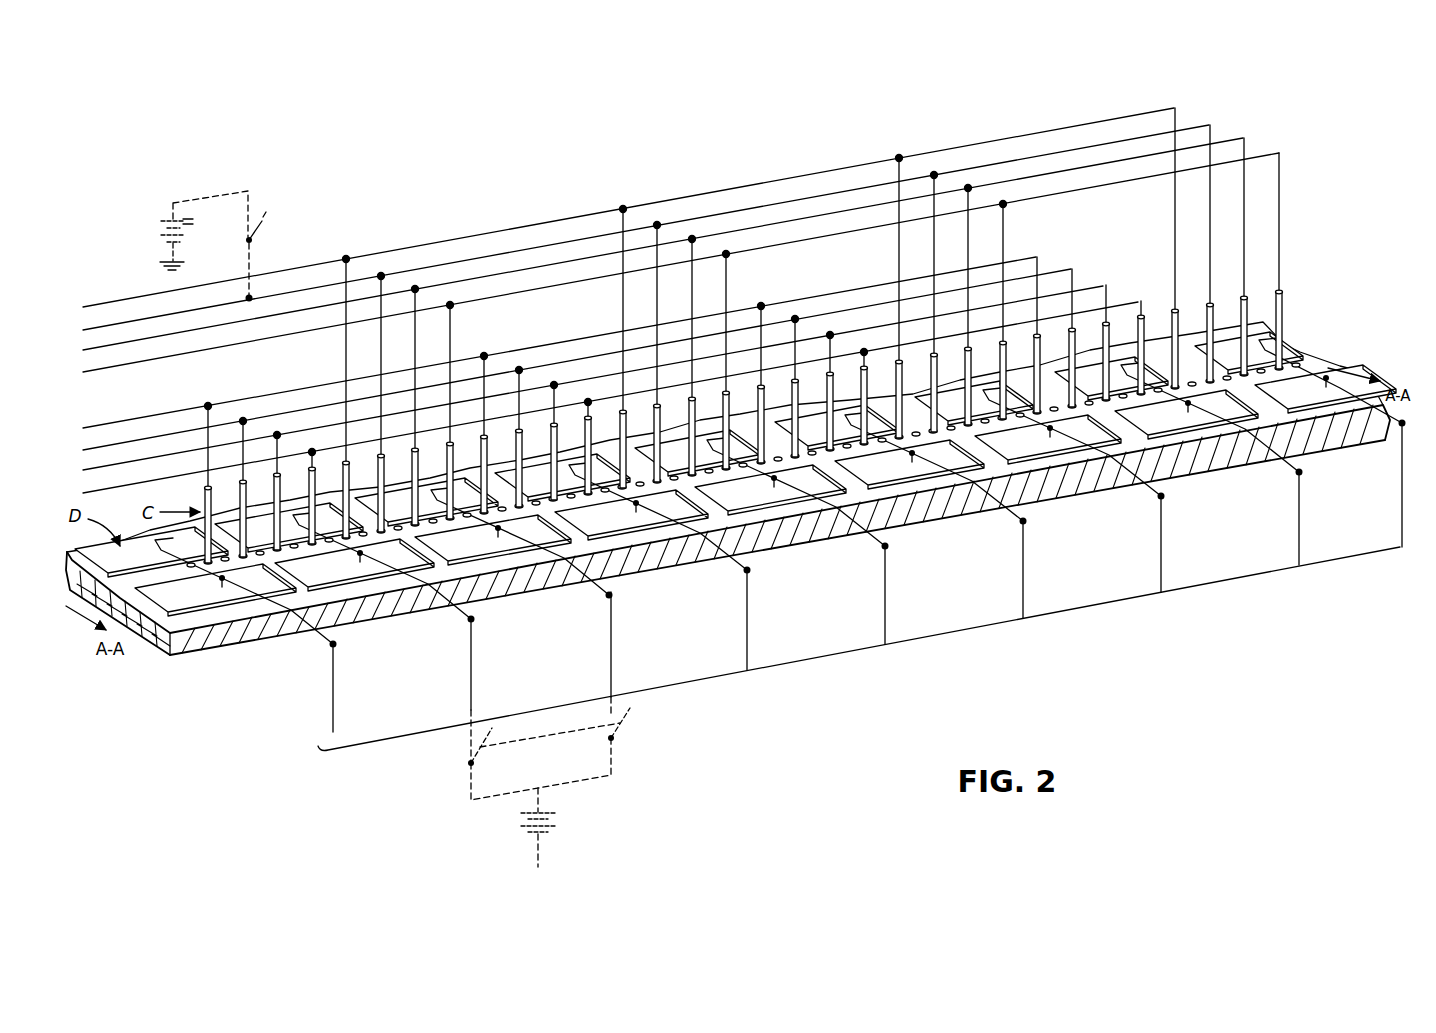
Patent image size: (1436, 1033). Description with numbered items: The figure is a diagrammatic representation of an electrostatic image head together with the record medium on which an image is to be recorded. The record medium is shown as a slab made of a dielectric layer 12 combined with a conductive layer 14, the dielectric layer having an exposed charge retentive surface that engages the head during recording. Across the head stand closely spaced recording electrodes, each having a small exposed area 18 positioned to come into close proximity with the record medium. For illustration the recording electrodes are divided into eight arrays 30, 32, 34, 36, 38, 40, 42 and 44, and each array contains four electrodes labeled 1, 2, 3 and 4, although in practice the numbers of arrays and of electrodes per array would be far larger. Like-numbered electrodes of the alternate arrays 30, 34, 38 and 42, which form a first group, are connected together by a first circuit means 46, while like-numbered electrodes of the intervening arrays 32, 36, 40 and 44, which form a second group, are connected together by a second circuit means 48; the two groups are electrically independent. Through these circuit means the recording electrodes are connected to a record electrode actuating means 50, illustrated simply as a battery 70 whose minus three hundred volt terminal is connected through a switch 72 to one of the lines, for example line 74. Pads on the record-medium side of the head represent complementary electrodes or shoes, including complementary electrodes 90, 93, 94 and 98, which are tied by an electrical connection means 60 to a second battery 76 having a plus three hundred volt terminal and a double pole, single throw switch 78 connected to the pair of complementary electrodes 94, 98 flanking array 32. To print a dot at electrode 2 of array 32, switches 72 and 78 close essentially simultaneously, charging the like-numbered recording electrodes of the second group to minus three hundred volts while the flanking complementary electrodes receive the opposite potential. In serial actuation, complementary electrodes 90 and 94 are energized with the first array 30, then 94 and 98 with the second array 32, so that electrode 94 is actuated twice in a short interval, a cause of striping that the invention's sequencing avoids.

The dielectric layer 12 is at (247, 619).
The conductive layer 14 is at (367, 616).
The exposed area of recording electrode 18 is at (226, 578).
The first array of recording electrodes 30 is at (264, 458).
The second array of recording electrodes 32 is at (403, 366).
The third array of recording electrodes 34 is at (543, 409).
The fourth array of recording electrodes 36 is at (680, 318).
The fifth array of recording electrodes 38 is at (817, 359).
The sixth array of recording electrodes 40 is at (953, 266).
The seventh array of recording electrodes 42 is at (1094, 308).
The eighth array of recording electrodes 44 is at (1233, 217).
The first circuit means 46 is at (170, 486).
The second circuit means 48 is at (308, 311).
The record electrode actuating means 50 is at (261, 192).
The electrical connection means 60 is at (860, 587).
The battery 70 is at (162, 222).
The switch 72 is at (260, 226).
The line 74 is at (246, 299).
The second battery 76 is at (555, 828).
The double pole, single throw switch 78 is at (628, 725).
The complementary electrode 90 is at (177, 548).
The electrode pad 93 is at (384, 509).
The complementary electrode 94 is at (249, 536).
The complementary electrode 98 is at (462, 548).
The recording electrode 1 is at (215, 483).
The recording electrode 2 is at (250, 488).
The recording electrode 3 is at (284, 491).
The recording electrode 4 is at (319, 497).